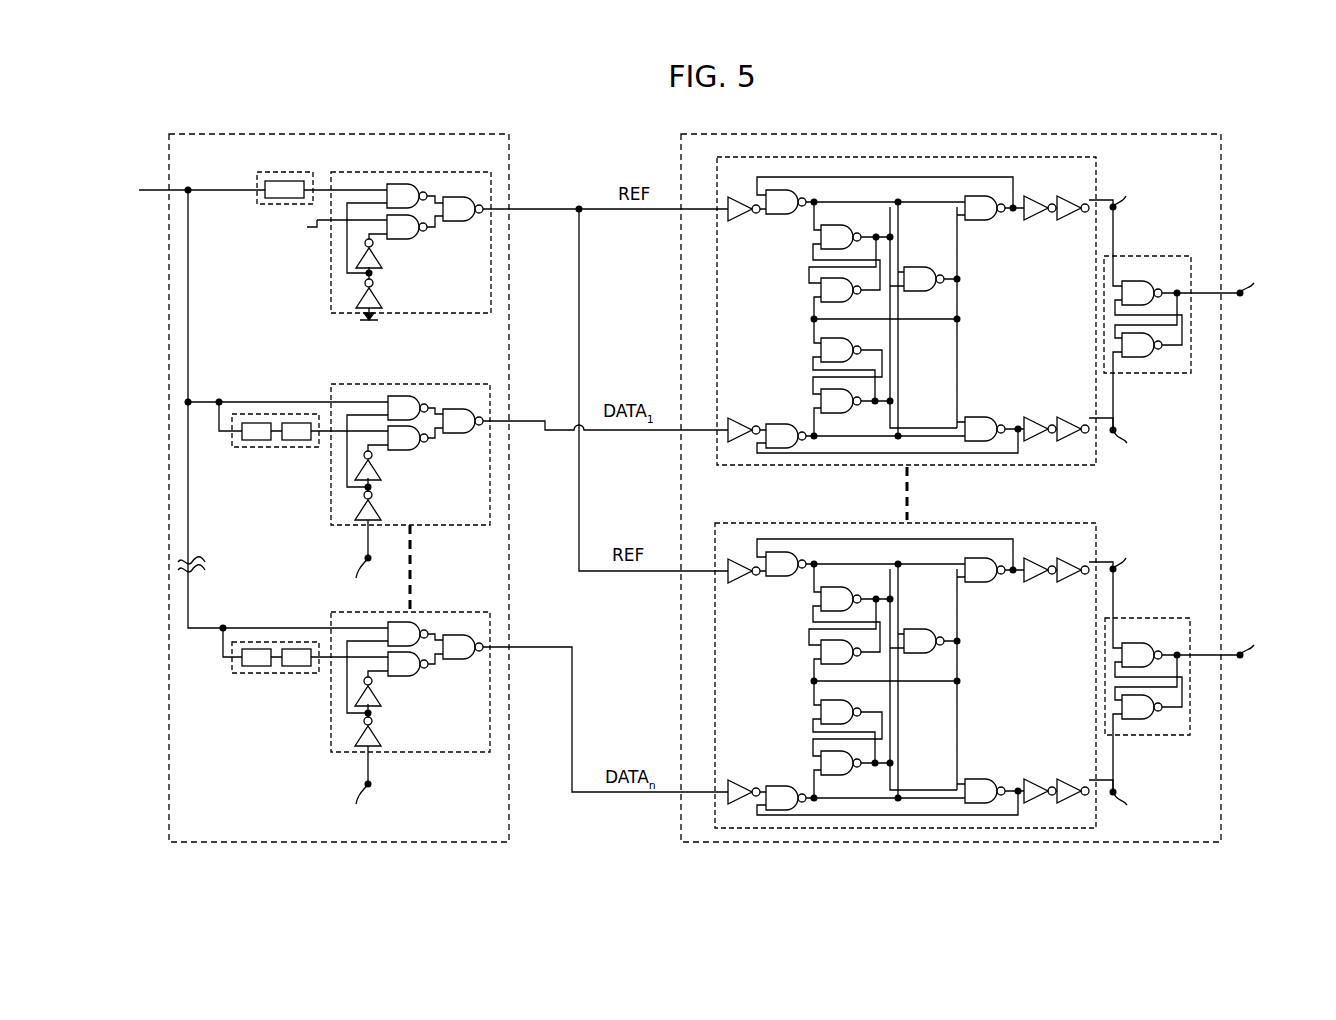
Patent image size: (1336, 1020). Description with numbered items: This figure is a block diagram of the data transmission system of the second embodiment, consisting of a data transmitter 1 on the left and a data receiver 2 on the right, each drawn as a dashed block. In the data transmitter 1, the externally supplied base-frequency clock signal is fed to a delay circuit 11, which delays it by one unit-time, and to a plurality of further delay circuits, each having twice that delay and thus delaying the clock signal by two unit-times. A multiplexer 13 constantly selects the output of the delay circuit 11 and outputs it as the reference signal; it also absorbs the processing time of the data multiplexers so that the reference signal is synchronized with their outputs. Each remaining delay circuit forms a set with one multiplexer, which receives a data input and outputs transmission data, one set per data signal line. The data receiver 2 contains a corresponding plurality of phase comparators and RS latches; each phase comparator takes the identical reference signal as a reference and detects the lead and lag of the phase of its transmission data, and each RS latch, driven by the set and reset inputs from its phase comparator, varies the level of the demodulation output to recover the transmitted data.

The data transmitter 1 is at (509, 134).
The data receiver 2 is at (1221, 134).
The delay circuit 11 is at (270, 206).
The multiplexer 13 is at (331, 300).